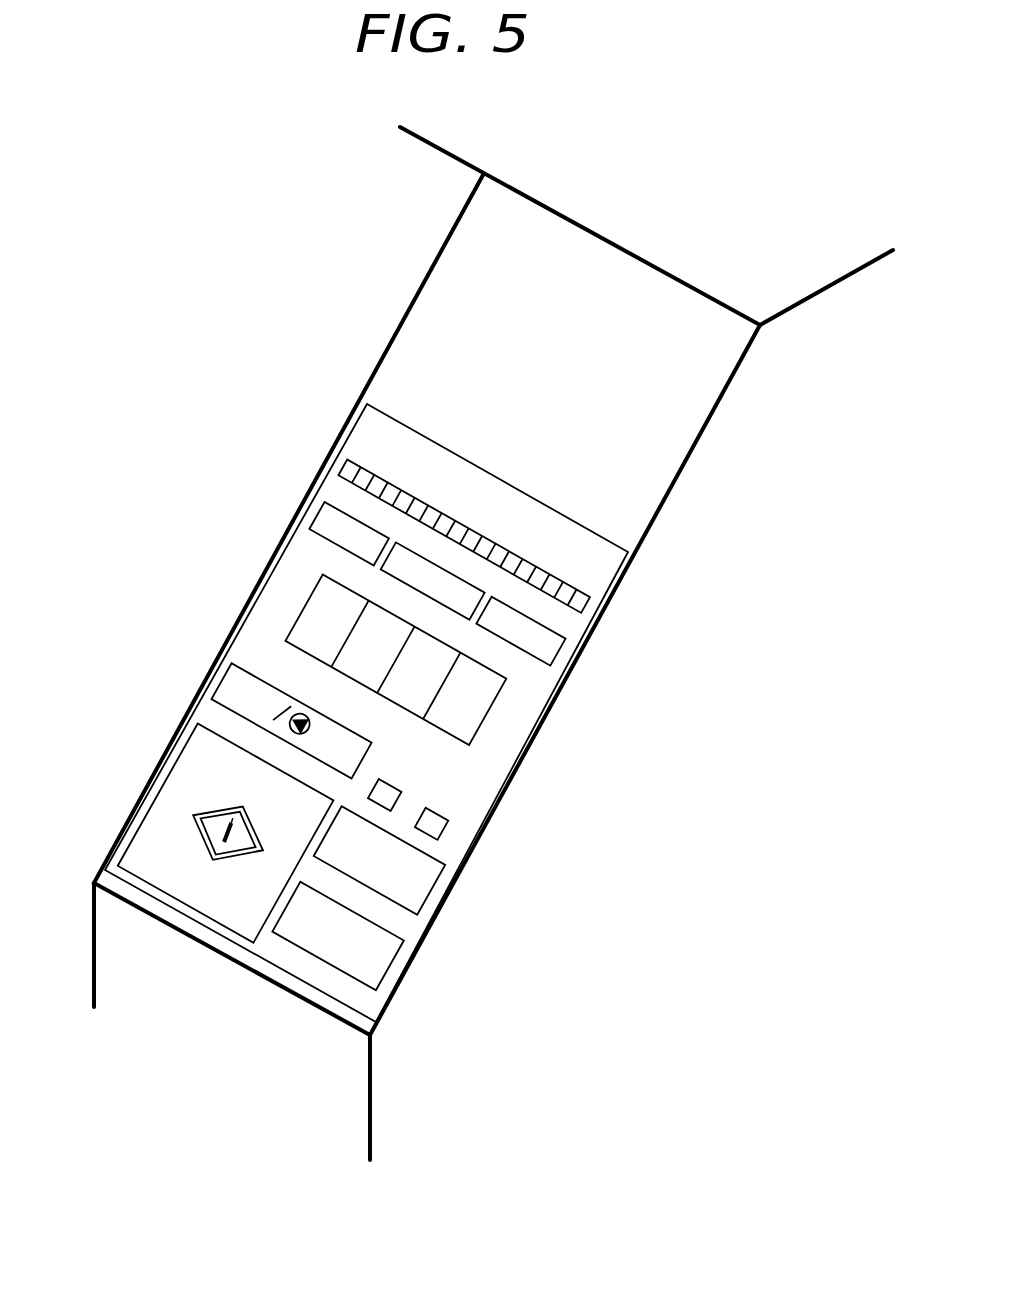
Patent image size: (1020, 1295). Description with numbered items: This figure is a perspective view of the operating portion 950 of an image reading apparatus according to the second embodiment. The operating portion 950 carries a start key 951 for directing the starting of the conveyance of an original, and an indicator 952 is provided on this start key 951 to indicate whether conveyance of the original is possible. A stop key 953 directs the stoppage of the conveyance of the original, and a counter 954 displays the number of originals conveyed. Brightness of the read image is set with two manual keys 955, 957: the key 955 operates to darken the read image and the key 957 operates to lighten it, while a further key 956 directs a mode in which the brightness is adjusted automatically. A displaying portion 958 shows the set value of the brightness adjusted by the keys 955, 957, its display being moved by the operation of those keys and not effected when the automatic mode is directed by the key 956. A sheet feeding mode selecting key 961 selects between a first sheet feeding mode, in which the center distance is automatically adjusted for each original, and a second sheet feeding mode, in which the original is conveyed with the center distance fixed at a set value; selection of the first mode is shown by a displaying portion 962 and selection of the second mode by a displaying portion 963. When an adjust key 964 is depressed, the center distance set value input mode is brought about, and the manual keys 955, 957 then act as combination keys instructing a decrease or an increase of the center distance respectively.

The operating portion 950 is at (578, 542).
The start key 951 is at (175, 838).
The indicator 952 is at (207, 810).
The stop key 953 is at (237, 687).
The counter 954 is at (302, 603).
The manual key 955 is at (323, 520).
The key 956 is at (417, 595).
The manual key 957 is at (552, 648).
The displaying portion 958 is at (342, 471).
The sheet feeding mode selecting key 961 is at (417, 883).
The displaying portion 962 is at (383, 795).
The displaying portion 963 is at (435, 828).
The adjust key 964 is at (385, 962).